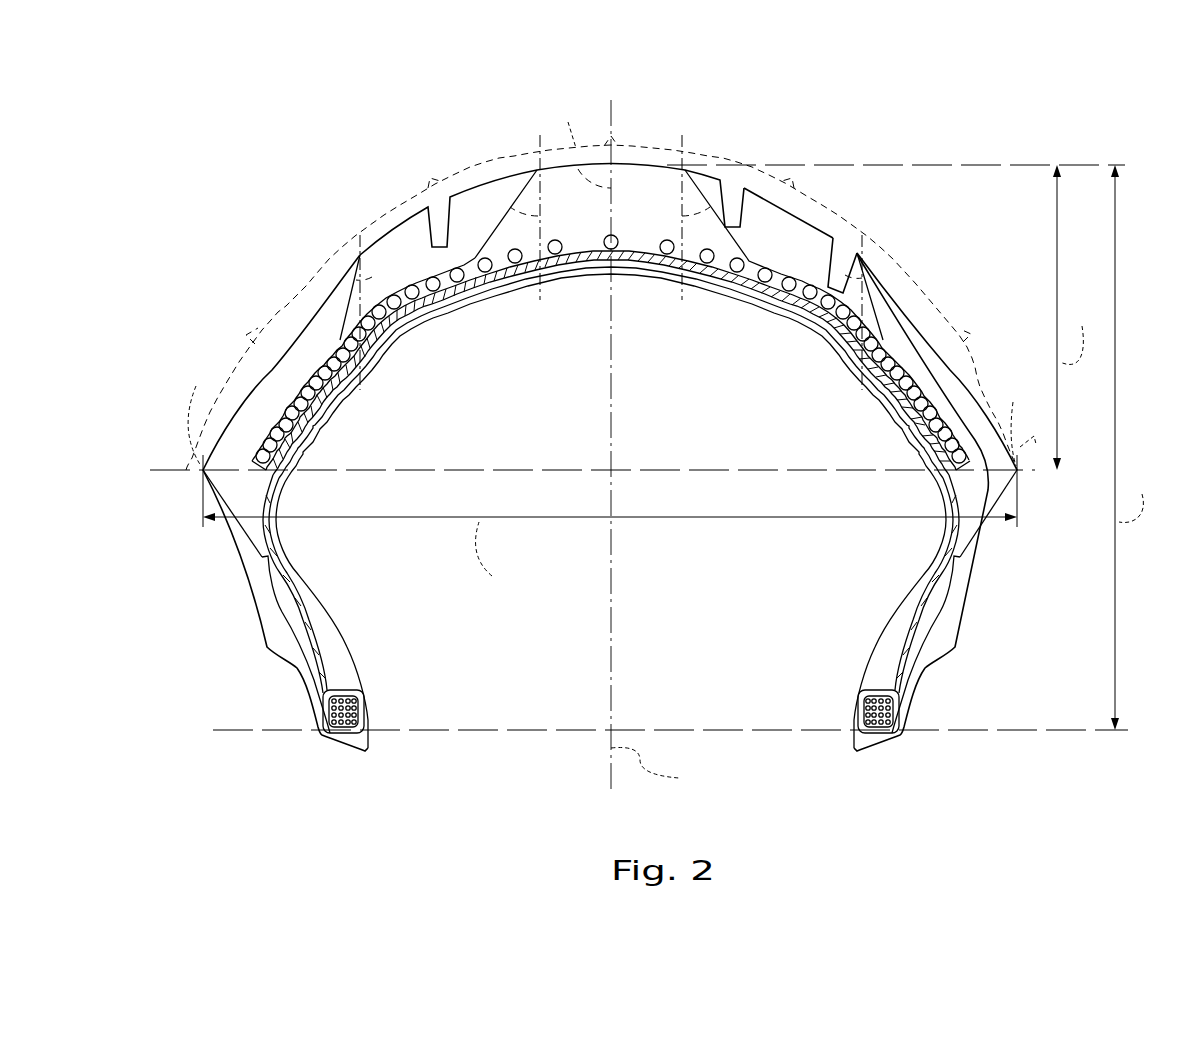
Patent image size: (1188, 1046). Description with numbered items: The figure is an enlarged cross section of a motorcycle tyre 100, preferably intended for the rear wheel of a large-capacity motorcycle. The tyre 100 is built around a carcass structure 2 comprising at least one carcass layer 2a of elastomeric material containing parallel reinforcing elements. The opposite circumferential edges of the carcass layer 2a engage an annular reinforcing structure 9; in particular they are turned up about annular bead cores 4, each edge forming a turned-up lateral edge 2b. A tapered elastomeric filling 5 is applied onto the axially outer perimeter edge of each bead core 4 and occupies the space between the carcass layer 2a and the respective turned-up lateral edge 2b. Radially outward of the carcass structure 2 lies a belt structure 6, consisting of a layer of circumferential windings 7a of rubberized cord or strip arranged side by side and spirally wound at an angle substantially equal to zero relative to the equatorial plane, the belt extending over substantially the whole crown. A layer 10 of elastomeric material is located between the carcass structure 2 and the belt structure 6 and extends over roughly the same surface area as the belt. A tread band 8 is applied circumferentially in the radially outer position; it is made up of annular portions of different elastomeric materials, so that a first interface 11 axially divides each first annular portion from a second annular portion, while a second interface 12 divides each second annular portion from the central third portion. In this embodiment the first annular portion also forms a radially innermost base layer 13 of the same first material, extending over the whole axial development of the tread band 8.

The tyre 100 is at (340, 146).
The tread band 8 is at (645, 142).
The second interface 12 is at (534, 166).
The radially innermost base layer 13 is at (803, 222).
The belt structure 6 is at (763, 258).
The circumferential windings 7a is at (905, 365).
The first interface 11 is at (358, 252).
The carcass structure 2 is at (900, 606).
The carcass layer 2a is at (881, 688).
The turned-up lateral edge 2b is at (942, 622).
The annular reinforcing structure 9 is at (882, 648).
The bead core 4 is at (860, 702).
The tapered elastomeric filling 5 is at (897, 660).
The layer of elastomeric material 10 is at (962, 538).